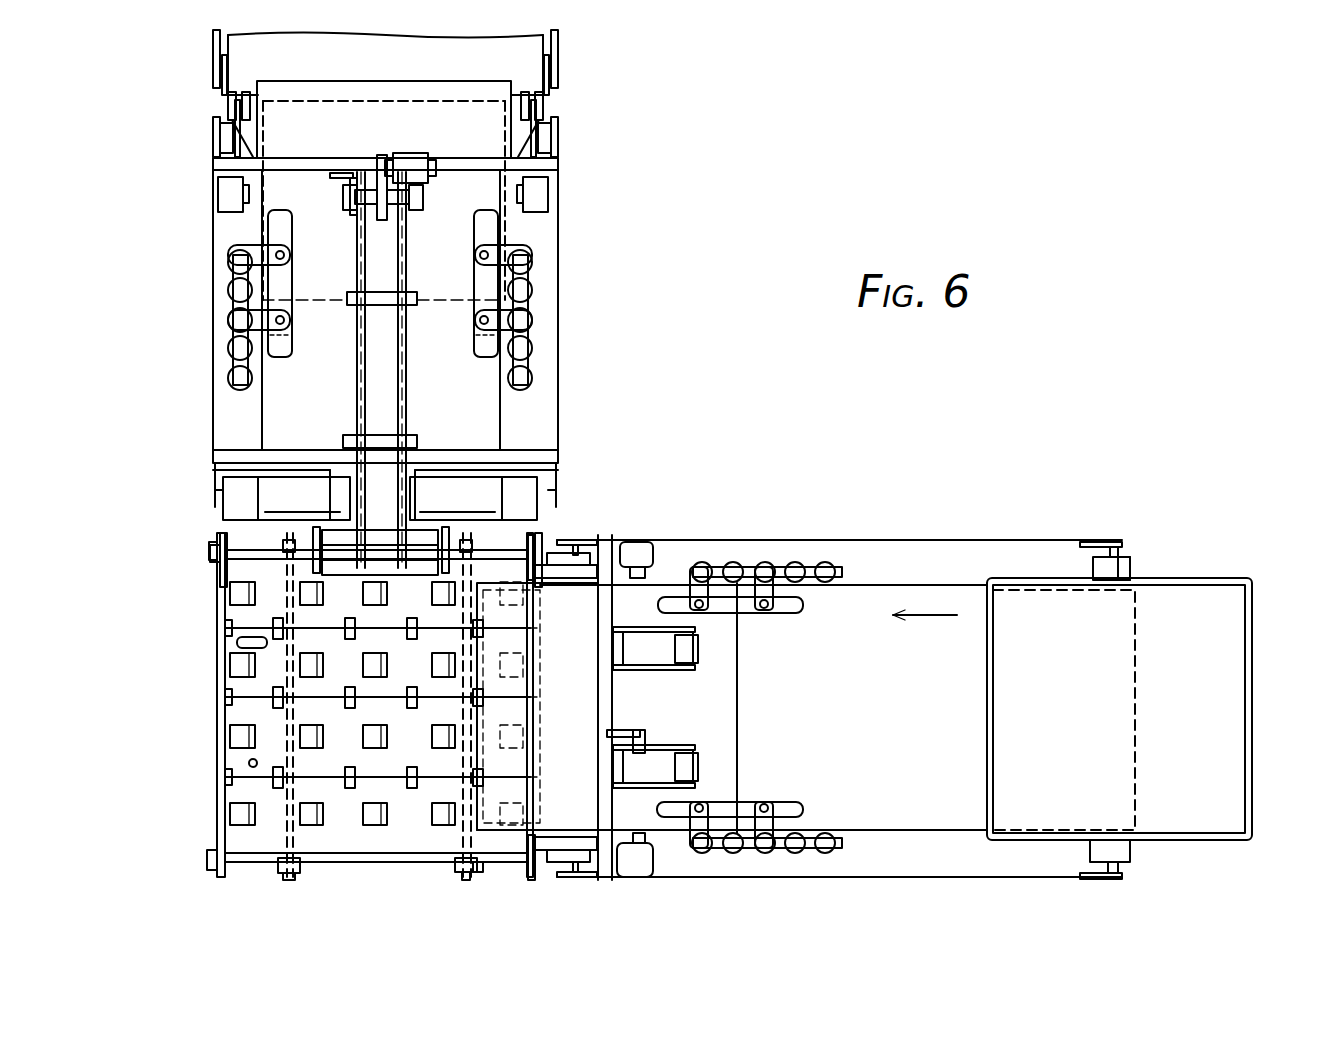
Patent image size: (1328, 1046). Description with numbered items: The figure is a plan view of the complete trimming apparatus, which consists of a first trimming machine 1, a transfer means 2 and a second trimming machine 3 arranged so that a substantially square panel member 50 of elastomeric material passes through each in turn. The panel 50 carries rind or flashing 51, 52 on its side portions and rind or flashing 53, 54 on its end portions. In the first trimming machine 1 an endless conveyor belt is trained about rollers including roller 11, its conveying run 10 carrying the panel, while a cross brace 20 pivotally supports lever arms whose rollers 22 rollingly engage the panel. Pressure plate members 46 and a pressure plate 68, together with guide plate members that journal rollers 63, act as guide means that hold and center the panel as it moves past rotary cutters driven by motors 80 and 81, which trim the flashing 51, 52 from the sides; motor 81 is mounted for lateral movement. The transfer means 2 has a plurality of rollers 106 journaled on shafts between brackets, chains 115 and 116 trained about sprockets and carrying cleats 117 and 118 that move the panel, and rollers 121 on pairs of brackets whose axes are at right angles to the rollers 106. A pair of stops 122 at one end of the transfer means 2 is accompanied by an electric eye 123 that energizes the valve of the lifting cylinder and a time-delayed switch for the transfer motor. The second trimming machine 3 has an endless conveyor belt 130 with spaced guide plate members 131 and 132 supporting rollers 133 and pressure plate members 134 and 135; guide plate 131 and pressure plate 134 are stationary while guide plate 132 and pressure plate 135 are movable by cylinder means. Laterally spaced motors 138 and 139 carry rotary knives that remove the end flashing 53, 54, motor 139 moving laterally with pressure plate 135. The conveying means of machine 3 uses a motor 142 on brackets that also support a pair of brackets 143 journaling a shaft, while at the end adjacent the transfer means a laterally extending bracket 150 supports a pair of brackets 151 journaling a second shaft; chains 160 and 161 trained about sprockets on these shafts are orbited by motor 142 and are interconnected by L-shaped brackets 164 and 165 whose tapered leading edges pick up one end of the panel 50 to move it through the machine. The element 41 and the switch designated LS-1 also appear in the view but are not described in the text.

The first trimming machine 1 is at (908, 470).
The transfer means 2 is at (152, 712).
The second trimming machine 3 is at (622, 247).
The conveying run 10 is at (862, 709).
The roller 11 is at (1133, 570).
The cross brace 20 is at (605, 693).
The rollers 22 is at (693, 655).
The roller chain 41 is at (790, 850).
The pressure plate members 46 is at (743, 812).
The panel member 50 is at (462, 263).
The rind or flashing 51 is at (575, 578).
The rind or flashing 52 is at (567, 835).
The rind or flashing 53 is at (253, 130).
The rind or flashing 54 is at (533, 132).
The rollers 63 is at (793, 562).
The pressure plate 68 is at (747, 607).
The motor 80 is at (640, 858).
The motor 81 is at (633, 552).
The rollers 106 is at (350, 789).
The chain 115 is at (283, 833).
The chain 116 is at (463, 883).
The cleat 117 is at (473, 867).
The cleat 118 is at (280, 867).
The rollers 121 is at (240, 815).
The stops 122 is at (249, 764).
The electric eye 123 is at (255, 640).
The endless conveyor belt 130 is at (273, 440).
The guide plate member 131 is at (233, 307).
The guide plate member 132 is at (530, 338).
The rollers 133 is at (228, 285).
The pressure plate member 134 is at (280, 227).
The pressure plate member 135 is at (487, 230).
The motor 138 is at (225, 193).
The motor 139 is at (540, 193).
The motor 142 is at (410, 167).
The brackets 143 is at (348, 182).
The bracket 150 is at (263, 187).
The brackets 151 is at (513, 200).
The chain 160 is at (405, 393).
The chain 161 is at (355, 393).
The bracket 164 is at (412, 440).
The bracket 165 is at (382, 293).
The limit switch LS-1 is at (637, 743).